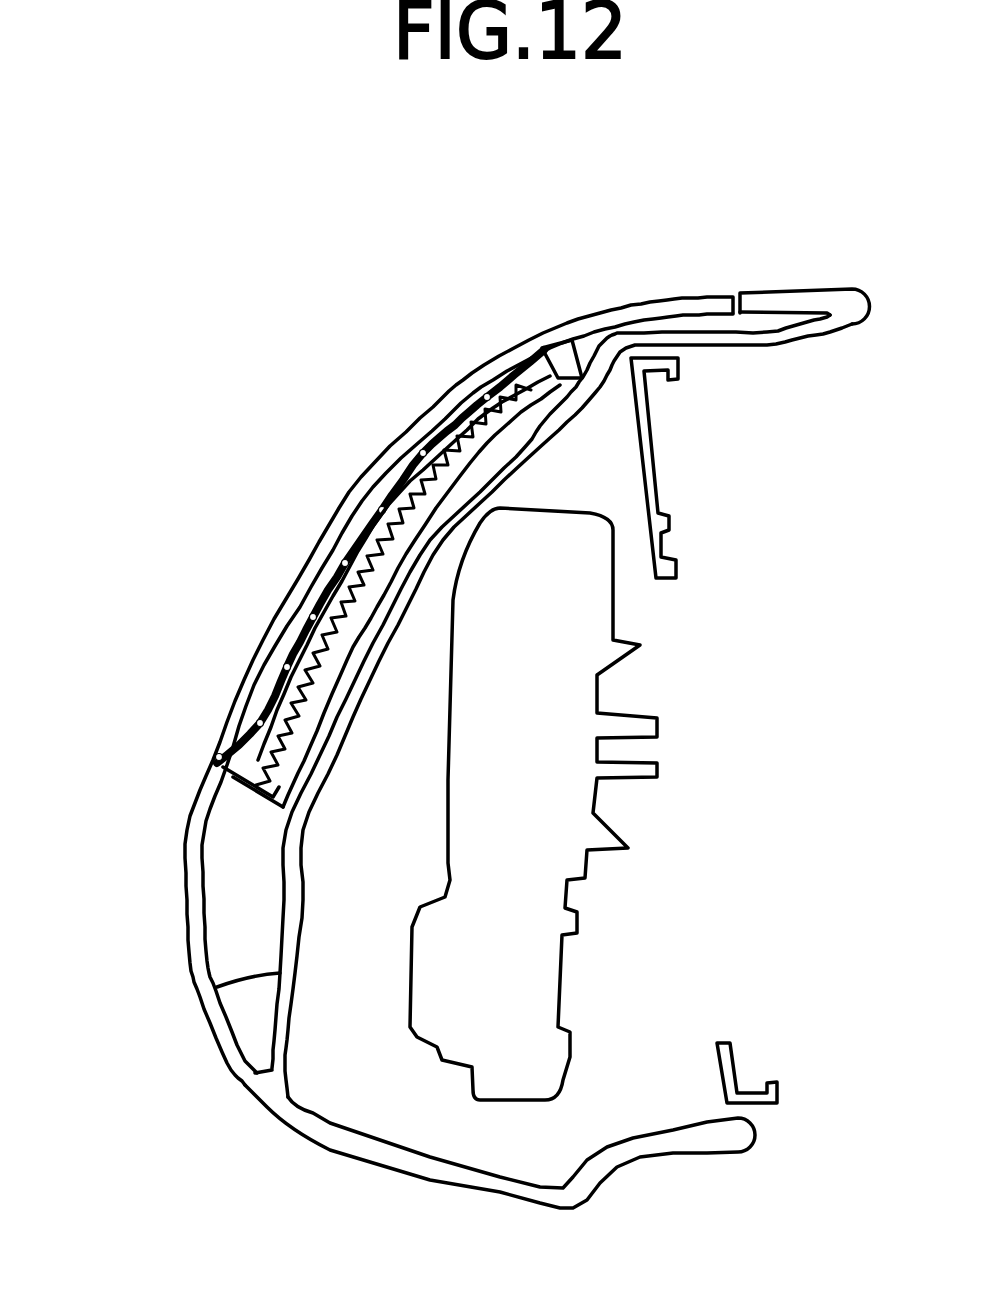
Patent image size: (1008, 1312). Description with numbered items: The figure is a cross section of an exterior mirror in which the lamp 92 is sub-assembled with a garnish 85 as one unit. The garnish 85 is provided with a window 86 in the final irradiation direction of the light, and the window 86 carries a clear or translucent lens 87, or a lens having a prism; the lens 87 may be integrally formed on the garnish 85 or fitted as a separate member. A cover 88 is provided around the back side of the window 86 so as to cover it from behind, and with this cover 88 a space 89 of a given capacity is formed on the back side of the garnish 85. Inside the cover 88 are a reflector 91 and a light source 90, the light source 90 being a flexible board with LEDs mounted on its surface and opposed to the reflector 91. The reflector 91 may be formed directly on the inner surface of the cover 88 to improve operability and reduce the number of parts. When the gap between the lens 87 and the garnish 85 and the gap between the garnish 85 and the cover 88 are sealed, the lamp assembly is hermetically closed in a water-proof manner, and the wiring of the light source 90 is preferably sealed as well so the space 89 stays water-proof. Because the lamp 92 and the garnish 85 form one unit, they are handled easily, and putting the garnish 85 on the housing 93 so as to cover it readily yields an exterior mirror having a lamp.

The garnish 85 is at (195, 878).
The window 86 is at (216, 756).
The lens 87 is at (248, 696).
The cover 88 is at (598, 312).
The space 89 is at (413, 500).
The light source 90 is at (340, 550).
The reflector 91 is at (455, 332).
The lamp 92 is at (360, 492).
The housing 93 is at (220, 990).